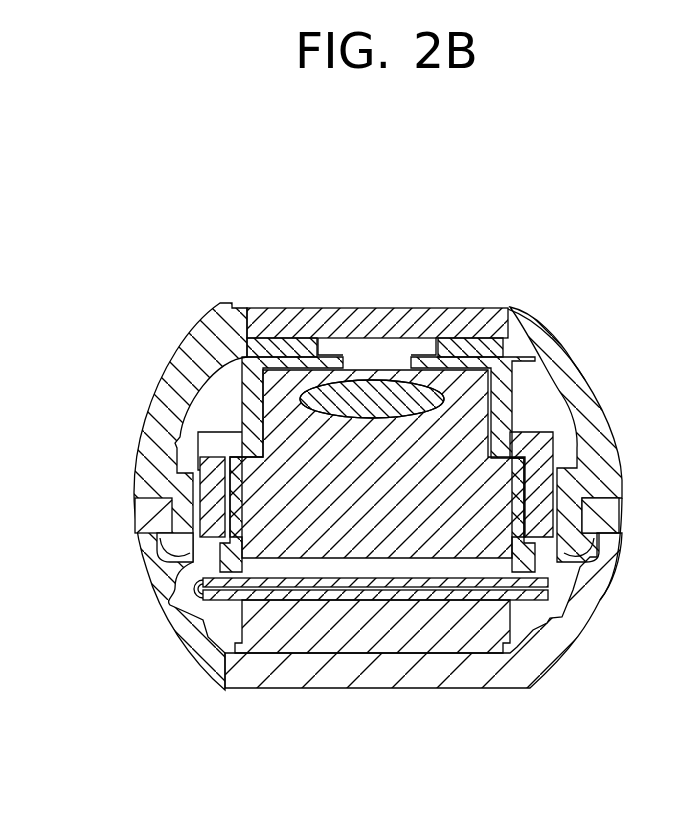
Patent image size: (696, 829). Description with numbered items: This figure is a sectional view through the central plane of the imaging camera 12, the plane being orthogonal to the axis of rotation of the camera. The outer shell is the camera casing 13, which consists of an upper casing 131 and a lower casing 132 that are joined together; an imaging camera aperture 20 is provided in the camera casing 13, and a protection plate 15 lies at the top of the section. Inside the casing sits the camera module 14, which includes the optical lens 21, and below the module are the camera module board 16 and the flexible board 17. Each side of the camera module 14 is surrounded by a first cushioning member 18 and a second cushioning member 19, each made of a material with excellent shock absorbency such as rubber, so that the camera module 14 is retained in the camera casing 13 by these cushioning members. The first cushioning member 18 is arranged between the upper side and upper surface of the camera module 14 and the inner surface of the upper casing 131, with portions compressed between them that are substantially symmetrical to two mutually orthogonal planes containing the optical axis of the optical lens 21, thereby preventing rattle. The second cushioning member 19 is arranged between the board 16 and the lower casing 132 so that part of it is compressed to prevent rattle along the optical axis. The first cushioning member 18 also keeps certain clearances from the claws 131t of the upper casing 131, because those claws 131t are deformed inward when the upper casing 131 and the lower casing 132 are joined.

The imaging camera 12 is at (360, 226).
The camera casing 13 is at (311, 505).
The upper casing 131 is at (182, 362).
The claws 131t is at (158, 541).
The lower casing 132 is at (212, 652).
The camera module 14 is at (197, 471).
The protection plate 15 is at (407, 323).
The camera module board 16 is at (535, 593).
The flexible board 17 is at (192, 589).
The first cushioning member 18 is at (540, 447).
The second cushioning member 19 is at (373, 637).
The imaging camera aperture 20 is at (506, 312).
The optical lens 21 is at (368, 390).